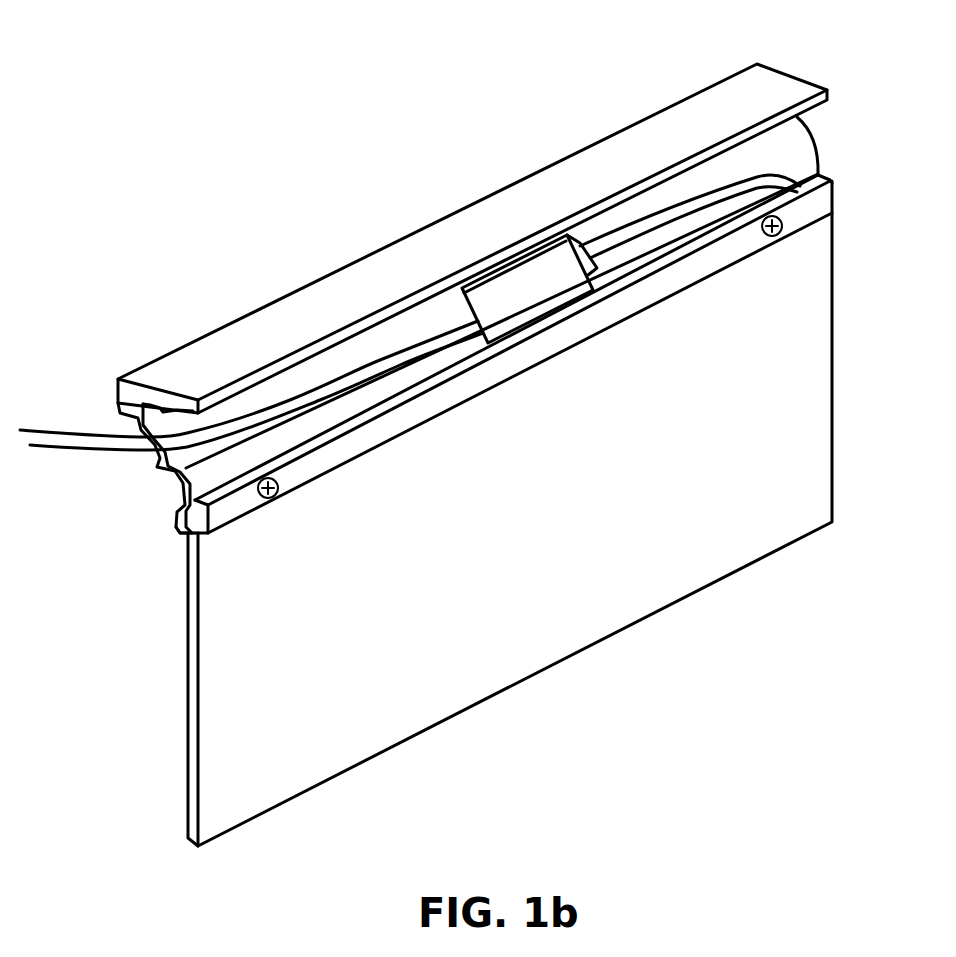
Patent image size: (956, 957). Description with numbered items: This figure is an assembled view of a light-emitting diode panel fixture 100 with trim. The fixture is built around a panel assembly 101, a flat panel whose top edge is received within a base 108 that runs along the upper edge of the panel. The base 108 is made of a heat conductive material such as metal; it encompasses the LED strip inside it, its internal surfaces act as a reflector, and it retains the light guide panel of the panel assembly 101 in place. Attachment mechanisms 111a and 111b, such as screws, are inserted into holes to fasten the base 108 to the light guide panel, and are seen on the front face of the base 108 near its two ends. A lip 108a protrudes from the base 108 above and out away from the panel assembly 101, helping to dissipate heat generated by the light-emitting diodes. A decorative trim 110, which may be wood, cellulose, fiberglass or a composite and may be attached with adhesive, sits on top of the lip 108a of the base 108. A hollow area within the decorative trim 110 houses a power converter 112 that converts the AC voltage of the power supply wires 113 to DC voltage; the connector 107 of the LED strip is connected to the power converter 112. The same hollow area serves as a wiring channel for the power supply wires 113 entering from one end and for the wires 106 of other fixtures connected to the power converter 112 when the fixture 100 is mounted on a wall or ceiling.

The light-emitting diode panel fixture 100 is at (248, 130).
The panel assembly 101 is at (543, 578).
The wires 106 is at (683, 198).
The connector 107 is at (567, 232).
The base 108 is at (836, 180).
The lip 108a is at (182, 532).
The decorative trim 110 is at (742, 98).
The attachment mechanism 111a is at (272, 477).
The attachment mechanism 111b is at (783, 233).
The power converter 112 is at (518, 292).
The power supply wires 113 is at (50, 428).